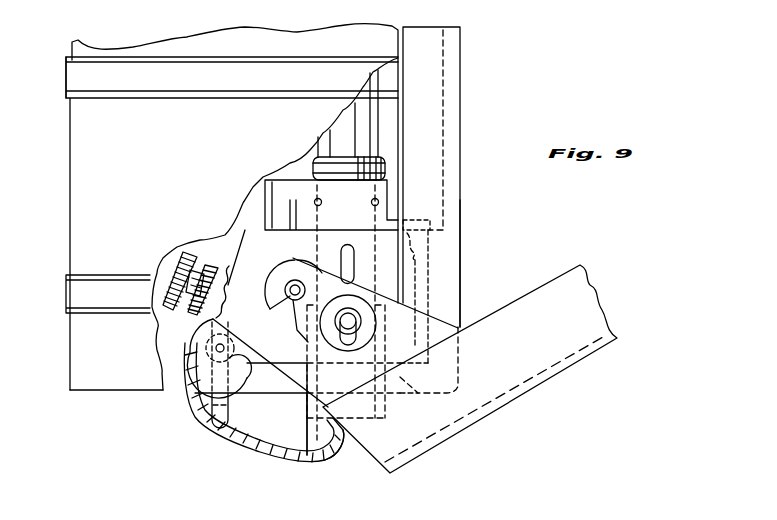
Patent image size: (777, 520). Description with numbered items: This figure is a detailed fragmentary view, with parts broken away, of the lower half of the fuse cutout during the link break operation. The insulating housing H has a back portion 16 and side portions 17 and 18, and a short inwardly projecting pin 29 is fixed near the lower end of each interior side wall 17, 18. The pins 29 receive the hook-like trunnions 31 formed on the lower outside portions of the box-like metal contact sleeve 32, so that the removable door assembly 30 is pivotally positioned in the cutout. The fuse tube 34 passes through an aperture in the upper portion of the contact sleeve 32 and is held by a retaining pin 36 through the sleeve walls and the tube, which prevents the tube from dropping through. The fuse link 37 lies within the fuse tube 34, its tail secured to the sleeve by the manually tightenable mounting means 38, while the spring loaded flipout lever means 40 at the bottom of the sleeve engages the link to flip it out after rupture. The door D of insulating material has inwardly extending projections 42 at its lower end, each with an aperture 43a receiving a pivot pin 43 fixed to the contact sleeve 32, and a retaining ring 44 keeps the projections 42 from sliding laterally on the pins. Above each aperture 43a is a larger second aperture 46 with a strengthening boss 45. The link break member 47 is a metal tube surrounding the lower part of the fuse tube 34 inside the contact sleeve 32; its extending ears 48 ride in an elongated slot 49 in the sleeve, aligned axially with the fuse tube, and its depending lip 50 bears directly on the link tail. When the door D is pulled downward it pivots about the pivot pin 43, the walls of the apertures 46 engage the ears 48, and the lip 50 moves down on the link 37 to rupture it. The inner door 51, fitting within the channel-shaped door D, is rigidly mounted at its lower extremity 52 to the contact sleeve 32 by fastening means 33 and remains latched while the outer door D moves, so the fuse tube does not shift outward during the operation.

The insulating housing H is at (68, 126).
The door D is at (461, 84).
The back portion 16 is at (70, 180).
The side portion 17 is at (105, 373).
The side portion 18 is at (172, 378).
The inwardly projecting pin 29 is at (216, 347).
The door assembly 30 is at (475, 429).
The hook-like trunnion 31 is at (247, 374).
The contact sleeve 32 is at (326, 320).
The fastening means 33 is at (415, 253).
The fuse tube 34 is at (372, 128).
The retaining pin 36 is at (372, 205).
The fuse link 37 is at (262, 445).
The mounting means 38 is at (170, 306).
The flipout lever means 40 is at (227, 403).
The inwardly extending projection 42 is at (272, 290).
The pivot pin 43 is at (277, 305).
The aperture 43a is at (289, 322).
The retaining ring 44 is at (287, 264).
The strengthening boss 45 is at (362, 308).
The second aperture 46 is at (341, 318).
The link break member 47 is at (320, 422).
The extending pin or ear 48 is at (351, 345).
The elongated slot 49 is at (344, 248).
The depending lip 50 is at (316, 458).
The inner door 51 is at (455, 140).
The lower extremity 52 is at (455, 307).